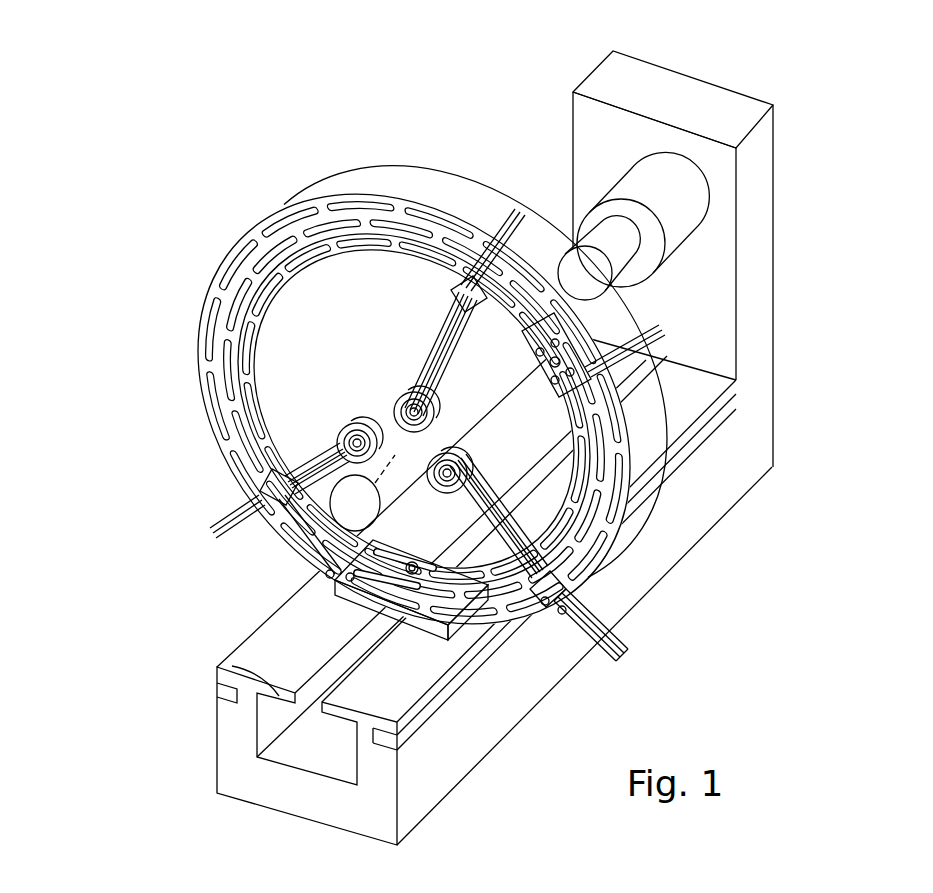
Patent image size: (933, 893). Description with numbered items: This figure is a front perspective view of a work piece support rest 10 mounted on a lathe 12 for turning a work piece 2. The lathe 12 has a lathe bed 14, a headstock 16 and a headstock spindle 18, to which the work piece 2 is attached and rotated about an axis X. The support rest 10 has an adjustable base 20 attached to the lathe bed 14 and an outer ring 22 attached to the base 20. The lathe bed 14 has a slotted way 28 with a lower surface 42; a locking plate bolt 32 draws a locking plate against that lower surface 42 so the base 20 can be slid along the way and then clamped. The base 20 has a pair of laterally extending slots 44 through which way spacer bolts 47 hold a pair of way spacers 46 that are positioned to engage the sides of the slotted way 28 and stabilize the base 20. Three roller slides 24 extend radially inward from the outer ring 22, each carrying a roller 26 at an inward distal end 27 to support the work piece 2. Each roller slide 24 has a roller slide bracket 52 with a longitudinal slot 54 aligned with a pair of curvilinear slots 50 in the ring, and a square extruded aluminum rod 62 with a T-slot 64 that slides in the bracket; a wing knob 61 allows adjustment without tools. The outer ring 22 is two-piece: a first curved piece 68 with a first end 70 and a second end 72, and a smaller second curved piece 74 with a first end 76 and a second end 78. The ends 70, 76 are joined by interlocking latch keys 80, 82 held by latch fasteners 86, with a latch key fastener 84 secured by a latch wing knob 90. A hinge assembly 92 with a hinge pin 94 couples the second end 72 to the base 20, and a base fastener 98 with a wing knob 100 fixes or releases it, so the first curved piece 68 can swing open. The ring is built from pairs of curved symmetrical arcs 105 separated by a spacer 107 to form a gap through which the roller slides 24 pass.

The work piece support rest 10 is at (150, 480).
The lathe 12 is at (822, 528).
The lathe bed 14 is at (418, 683).
The headstock 16 is at (755, 240).
The headstock spindle 18 is at (675, 195).
The work piece 2 is at (612, 290).
The adjustable base 20 is at (365, 592).
The outer ring 22 is at (262, 252).
The roller slides 24 is at (622, 632).
The roller 26 is at (362, 423).
The inward distal end 27 is at (327, 457).
The slotted way 28 is at (333, 770).
The locking plate bolt 32 is at (414, 562).
The lower surface 42 is at (265, 667).
The laterally extending slots 44 is at (435, 612).
The way spacers 46 is at (402, 614).
The way spacer bolts 47 is at (448, 548).
The curvilinear slots 50 is at (330, 226).
The roller slide bracket 52 is at (478, 245).
The longitudinal slot 54 is at (510, 232).
The wing knob 61 is at (438, 225).
The roller slide rod 62 is at (565, 515).
The T-slot 64 is at (622, 655).
The first curved piece 68 is at (206, 325).
The first end 70 is at (552, 300).
The second end 72 is at (290, 540).
The second curved piece 74 is at (593, 482).
The first end 76 is at (605, 380).
The second end 78 is at (530, 618).
The latch key 80 is at (590, 345).
The latch key 82 is at (548, 368).
The latch key fastener 84 is at (540, 355).
The latch fasteners 86 is at (552, 390).
The latch wing knob 90 is at (577, 345).
The hinge assembly 92 is at (170, 605).
The hinge pin 94 is at (375, 548).
The base fastener 98 is at (326, 574).
The wing knob 100 is at (348, 582).
The curved symmetrical arcs 105 is at (338, 213).
The spacer 107 is at (252, 333).